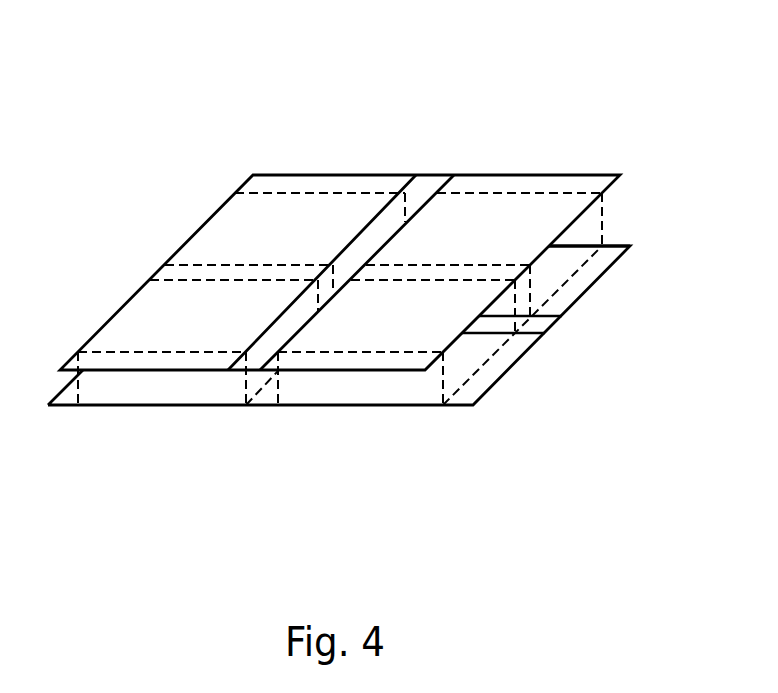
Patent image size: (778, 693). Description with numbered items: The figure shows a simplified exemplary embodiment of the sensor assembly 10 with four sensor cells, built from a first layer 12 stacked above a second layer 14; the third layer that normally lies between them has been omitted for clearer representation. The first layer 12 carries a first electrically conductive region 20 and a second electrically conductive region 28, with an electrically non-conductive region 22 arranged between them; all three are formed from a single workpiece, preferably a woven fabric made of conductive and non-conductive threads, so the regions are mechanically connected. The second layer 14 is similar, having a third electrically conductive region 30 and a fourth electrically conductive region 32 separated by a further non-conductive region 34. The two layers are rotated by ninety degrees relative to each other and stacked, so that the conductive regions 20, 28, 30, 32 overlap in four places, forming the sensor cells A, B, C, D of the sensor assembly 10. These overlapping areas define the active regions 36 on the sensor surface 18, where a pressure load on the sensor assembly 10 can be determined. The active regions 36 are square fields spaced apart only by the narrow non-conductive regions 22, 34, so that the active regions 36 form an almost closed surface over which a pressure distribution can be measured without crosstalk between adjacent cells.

The sensor assembly 10 is at (425, 78).
The first layer 12 is at (548, 175).
The second layer 14 is at (490, 390).
The sensor surface 18 is at (102, 354).
The first electrically conductive region 20 is at (157, 362).
The non-conductive region 22 is at (247, 362).
The second electrically conductive region 28 is at (350, 362).
The third electrically conductive region 30 is at (492, 372).
The fourth electrically conductive region 32 is at (585, 277).
The further non-conductive region 34 is at (538, 327).
The active regions 36 is at (152, 304).
The sensor cell A is at (112, 391).
The sensor cell B is at (412, 391).
The sensor cell C is at (569, 259).
The sensor cell D is at (196, 216).